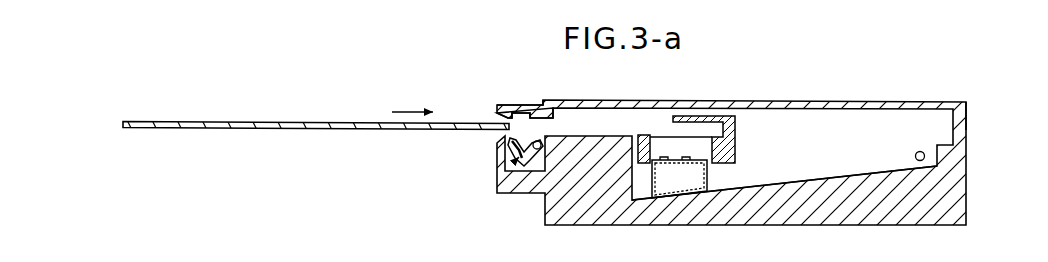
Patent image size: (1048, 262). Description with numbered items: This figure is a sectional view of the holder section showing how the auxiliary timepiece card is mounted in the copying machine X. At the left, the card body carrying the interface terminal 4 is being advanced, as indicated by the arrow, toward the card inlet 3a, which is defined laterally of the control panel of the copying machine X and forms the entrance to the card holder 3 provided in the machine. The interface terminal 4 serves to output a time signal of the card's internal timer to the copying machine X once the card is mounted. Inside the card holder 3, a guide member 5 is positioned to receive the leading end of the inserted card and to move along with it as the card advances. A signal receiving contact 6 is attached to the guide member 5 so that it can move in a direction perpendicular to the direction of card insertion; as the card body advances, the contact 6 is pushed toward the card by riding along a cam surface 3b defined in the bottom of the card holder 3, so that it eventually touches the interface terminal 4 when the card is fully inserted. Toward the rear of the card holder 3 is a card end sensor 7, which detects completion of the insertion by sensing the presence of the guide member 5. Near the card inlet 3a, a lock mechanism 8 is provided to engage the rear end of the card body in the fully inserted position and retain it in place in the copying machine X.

The card holder 3 is at (813, 127).
The card inlet 3a is at (484, 108).
The cam surface 3b is at (842, 175).
The interface terminal 4 is at (465, 131).
The guide member 5 is at (735, 121).
The signal receiving contact 6 is at (707, 185).
The card end sensor 7 is at (920, 151).
The lock mechanism 8 is at (498, 178).
The copying machine X is at (975, 118).